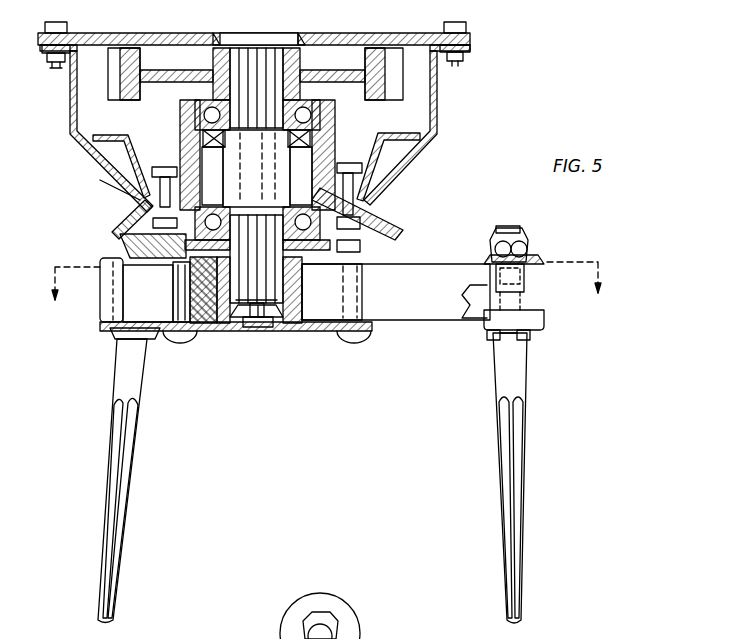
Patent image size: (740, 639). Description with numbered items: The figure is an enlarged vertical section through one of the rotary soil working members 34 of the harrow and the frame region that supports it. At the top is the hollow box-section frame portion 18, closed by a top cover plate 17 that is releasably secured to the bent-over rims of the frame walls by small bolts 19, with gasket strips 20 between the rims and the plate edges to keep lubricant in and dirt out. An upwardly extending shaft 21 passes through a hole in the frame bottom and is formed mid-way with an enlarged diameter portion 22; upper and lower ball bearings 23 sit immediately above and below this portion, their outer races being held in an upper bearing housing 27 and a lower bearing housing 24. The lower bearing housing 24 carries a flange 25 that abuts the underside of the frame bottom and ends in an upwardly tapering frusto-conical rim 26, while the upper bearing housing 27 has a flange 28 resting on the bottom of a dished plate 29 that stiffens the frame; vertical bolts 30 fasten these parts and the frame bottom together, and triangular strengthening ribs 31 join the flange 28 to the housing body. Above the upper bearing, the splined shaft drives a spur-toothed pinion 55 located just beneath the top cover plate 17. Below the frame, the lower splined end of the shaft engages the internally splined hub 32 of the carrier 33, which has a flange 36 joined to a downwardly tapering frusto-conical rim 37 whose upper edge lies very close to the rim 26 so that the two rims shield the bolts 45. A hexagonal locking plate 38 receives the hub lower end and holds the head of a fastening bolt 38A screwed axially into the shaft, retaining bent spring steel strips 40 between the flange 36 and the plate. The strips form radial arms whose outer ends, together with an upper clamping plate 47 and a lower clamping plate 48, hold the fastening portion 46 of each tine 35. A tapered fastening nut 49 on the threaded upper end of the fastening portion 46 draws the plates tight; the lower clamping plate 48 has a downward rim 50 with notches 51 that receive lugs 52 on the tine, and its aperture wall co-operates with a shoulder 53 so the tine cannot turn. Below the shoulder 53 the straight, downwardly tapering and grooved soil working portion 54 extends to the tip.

The top cover plate 17 is at (181, 33).
The hollow box-section frame portion 18 is at (72, 123).
The bolts 19 is at (60, 26).
The gasket strips 20 is at (83, 53).
The shaft 21 is at (262, 47).
The enlarged diameter portion 22 is at (263, 163).
The ball bearings 23 is at (322, 107).
The lower bearing housing 24 is at (326, 268).
The flange 25 is at (140, 201).
The frusto-conical rim 26 is at (125, 219).
The upper bearing housing 27 is at (157, 166).
The flange 28 is at (370, 173).
The dished plate 29 is at (410, 133).
The bolts 30 is at (160, 166).
The strengthening ribs 31 is at (146, 132).
The internally splined hub 32 is at (233, 335).
The carrier 33 is at (462, 262).
The rotary soil working member 34 is at (326, 423).
The tines 35 is at (115, 383).
The flange 36 is at (212, 290).
The frusto-conical rim 37 is at (120, 247).
The locking plate 38 is at (322, 332).
The fastening bolt 38A is at (268, 328).
The outer spring steel strips 40 is at (415, 320).
The bolts 45 is at (175, 305).
The fastening portion 46 is at (520, 279).
The upper clamping plate 47 is at (100, 272).
The lower clamping plate 48 is at (103, 329).
The fastening nut 49 is at (520, 245).
The rim 50 is at (492, 335).
The notches 51 is at (498, 342).
The lug 52 is at (523, 352).
The shoulder 53 is at (463, 303).
The soil working portion 54 is at (128, 507).
The pinion 55 is at (398, 85).